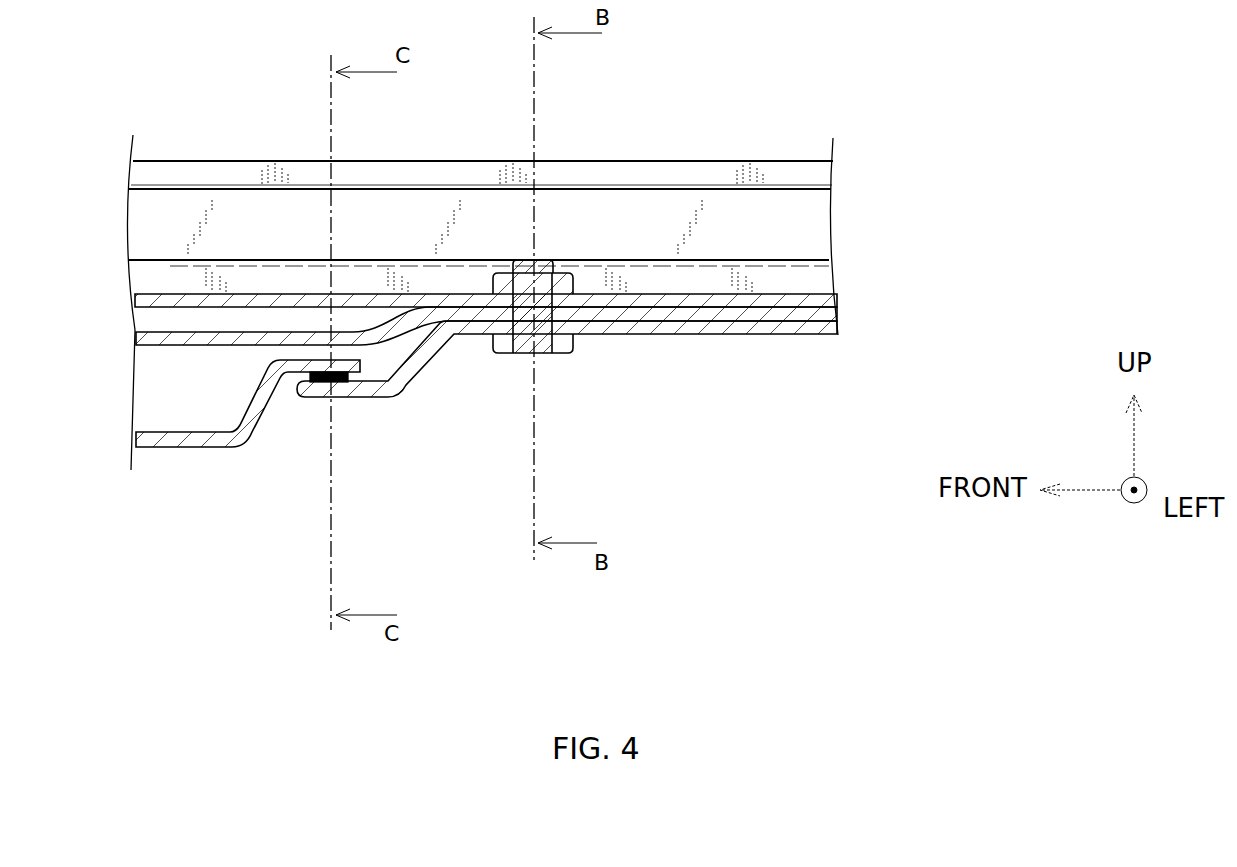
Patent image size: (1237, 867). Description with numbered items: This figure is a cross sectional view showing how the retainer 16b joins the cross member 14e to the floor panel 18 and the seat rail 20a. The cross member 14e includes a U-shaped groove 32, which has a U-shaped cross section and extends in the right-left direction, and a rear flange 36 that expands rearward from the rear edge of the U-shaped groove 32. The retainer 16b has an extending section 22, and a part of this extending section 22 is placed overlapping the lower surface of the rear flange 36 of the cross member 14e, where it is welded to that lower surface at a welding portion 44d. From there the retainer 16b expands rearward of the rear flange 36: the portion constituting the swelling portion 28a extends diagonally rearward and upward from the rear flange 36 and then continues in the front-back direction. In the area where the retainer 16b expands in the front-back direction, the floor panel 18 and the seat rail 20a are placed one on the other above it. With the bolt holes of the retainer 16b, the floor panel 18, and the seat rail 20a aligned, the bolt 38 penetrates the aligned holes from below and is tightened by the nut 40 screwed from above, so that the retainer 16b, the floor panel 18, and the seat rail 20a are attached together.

The cross member 14e is at (203, 449).
The retainer 16b is at (684, 345).
The floor panel 18 is at (203, 347).
The seat rail 20a is at (837, 163).
The extending section 22 is at (352, 398).
The swelling portion 28a is at (470, 336).
The U-shaped groove 32 is at (157, 449).
The rear flange 36 is at (275, 393).
The bolt 38 is at (547, 355).
The nut 40 is at (560, 290).
The welding portion 44d is at (316, 383).